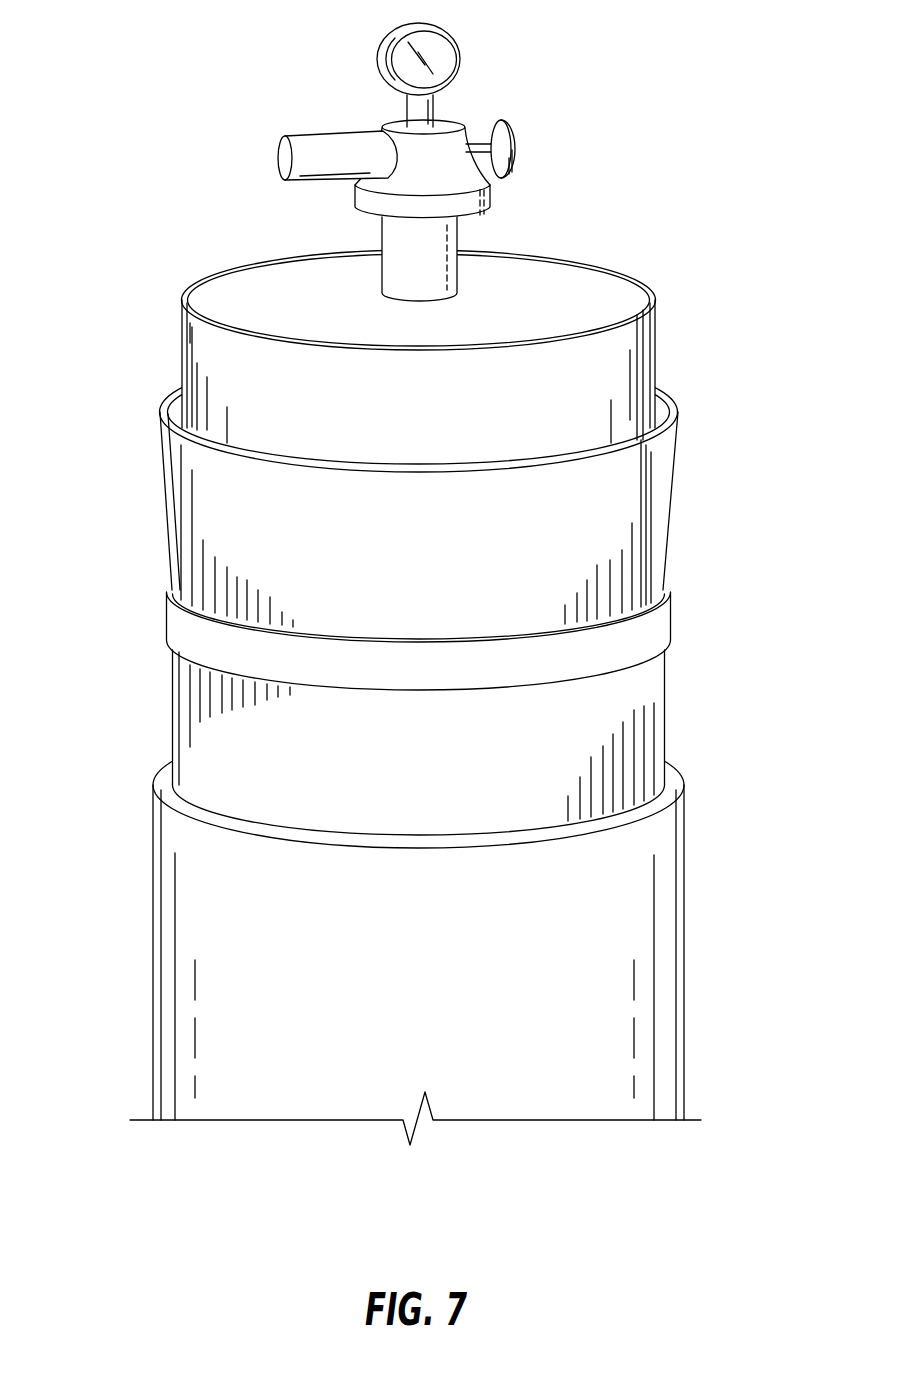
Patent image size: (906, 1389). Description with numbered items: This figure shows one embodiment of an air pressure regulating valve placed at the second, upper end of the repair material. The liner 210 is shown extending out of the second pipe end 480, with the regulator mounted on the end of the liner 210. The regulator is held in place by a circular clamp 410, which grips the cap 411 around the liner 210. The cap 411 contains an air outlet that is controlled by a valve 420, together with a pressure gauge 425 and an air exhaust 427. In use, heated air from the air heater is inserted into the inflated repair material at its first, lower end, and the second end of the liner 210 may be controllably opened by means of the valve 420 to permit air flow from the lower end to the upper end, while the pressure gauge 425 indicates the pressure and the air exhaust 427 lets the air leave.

The pressure gauge 425 is at (433, 56).
The air exhaust 427 is at (313, 132).
The valve 420 is at (515, 138).
The cap 411 is at (635, 352).
The circular clamp 410 is at (660, 630).
The liner 210 is at (177, 717).
The second pipe end 480 is at (168, 870).